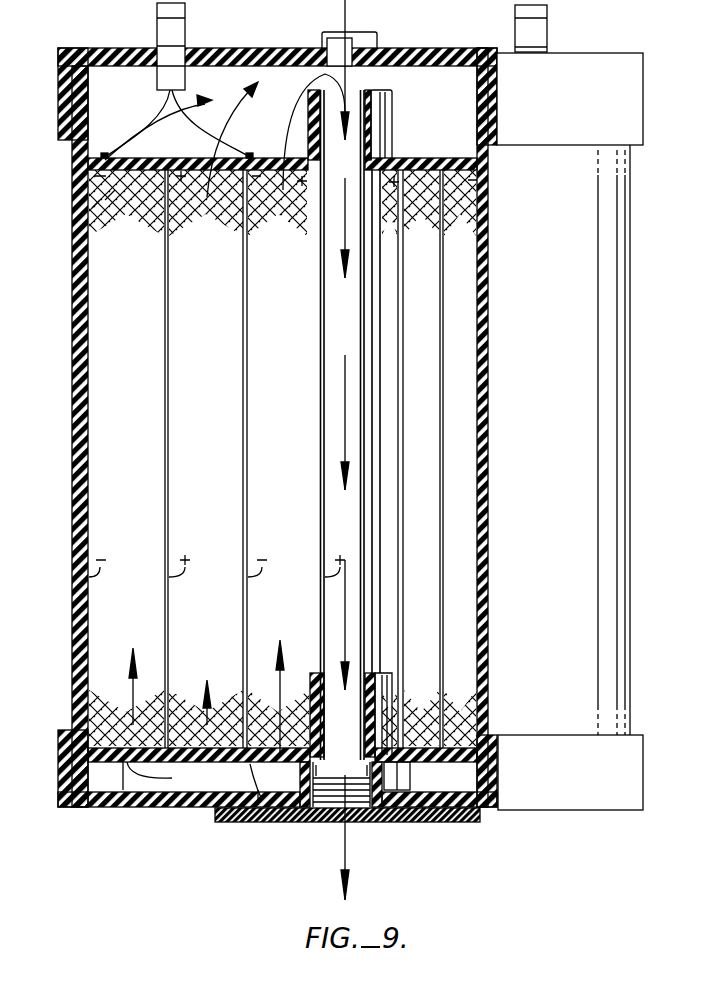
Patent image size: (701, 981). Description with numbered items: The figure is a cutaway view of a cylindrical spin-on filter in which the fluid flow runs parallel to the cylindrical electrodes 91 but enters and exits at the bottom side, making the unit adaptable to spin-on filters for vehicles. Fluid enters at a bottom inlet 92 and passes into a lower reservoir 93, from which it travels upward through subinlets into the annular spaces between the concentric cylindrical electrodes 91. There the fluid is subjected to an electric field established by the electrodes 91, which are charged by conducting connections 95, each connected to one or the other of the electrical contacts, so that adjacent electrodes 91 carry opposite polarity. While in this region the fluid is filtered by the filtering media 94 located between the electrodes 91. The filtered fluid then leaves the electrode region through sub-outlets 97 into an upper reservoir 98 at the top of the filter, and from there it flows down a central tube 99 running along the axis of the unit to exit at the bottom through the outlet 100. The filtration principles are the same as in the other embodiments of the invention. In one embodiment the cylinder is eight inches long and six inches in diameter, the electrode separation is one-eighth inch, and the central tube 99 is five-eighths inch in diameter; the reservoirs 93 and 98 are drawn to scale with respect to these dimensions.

The cylindrical electrodes 91 is at (165, 288).
The bottom inlet 92 is at (281, 815).
The reservoir 93 is at (287, 760).
The filtering media 94 is at (100, 218).
The conducting connections 95 is at (199, 768).
The sub-outlets 97 is at (132, 140).
The reservoir 98 is at (276, 118).
The central tube 99 is at (353, 312).
The outlet 100 is at (334, 818).